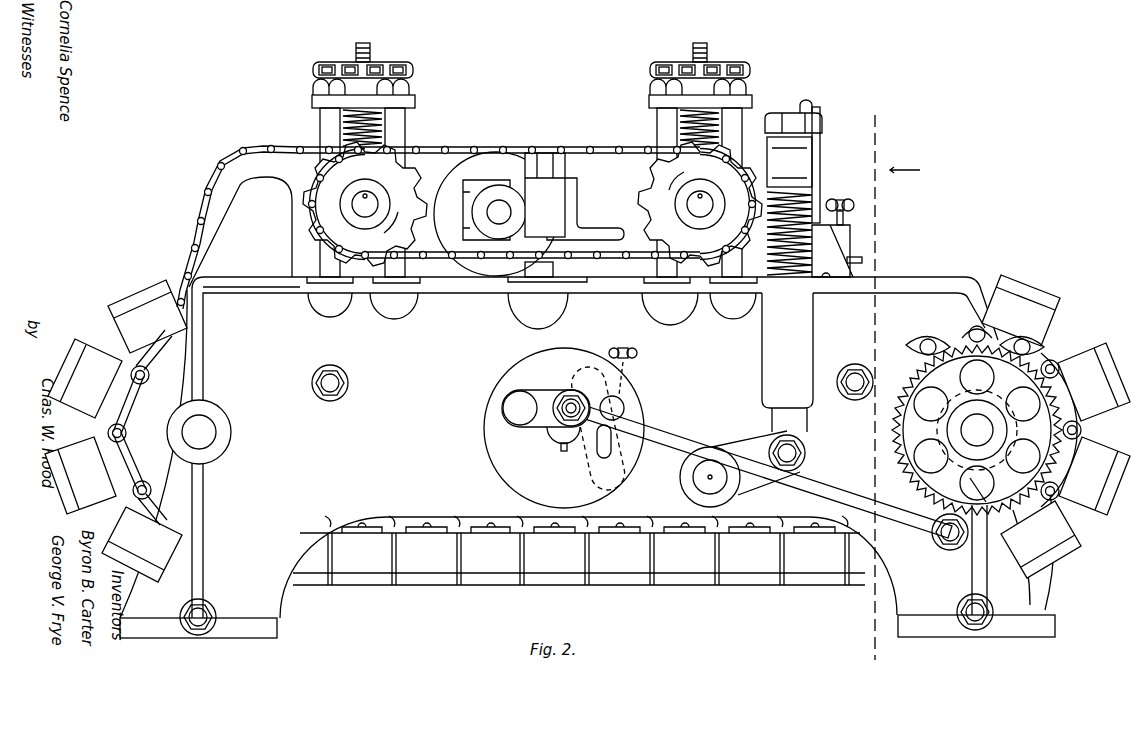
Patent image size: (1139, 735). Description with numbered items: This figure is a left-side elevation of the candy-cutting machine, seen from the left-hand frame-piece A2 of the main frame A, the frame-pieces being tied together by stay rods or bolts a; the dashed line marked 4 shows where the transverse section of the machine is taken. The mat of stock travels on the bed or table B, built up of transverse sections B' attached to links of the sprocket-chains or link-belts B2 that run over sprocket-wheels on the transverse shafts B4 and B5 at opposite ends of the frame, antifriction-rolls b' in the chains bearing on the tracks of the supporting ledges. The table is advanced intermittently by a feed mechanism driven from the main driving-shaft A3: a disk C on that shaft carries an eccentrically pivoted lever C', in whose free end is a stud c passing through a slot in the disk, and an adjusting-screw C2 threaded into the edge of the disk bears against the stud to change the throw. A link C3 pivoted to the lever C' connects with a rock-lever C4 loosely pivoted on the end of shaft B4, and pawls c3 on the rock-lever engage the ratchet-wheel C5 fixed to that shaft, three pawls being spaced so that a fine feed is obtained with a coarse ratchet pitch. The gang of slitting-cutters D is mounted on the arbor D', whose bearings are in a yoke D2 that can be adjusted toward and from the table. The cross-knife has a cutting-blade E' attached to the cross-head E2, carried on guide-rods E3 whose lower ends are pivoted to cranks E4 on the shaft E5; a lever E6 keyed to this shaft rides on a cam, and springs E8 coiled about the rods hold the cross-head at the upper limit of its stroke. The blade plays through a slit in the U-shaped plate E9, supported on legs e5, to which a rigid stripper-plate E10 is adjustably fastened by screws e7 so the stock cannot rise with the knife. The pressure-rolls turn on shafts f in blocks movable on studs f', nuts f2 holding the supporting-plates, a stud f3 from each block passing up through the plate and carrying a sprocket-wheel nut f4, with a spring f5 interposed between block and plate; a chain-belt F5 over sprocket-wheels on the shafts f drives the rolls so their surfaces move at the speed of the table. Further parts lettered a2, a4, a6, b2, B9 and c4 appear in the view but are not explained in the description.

The main frame A is at (588, 397).
The left-hand frame-piece A2 is at (280, 618).
The main driving-shaft A3 is at (548, 443).
The stay rods or bolts a is at (345, 376).
The bearing block a2 is at (555, 272).
The bearing block a4 is at (569, 167).
The bearing bracket a6 is at (482, 186).
The bed or table B is at (595, 293).
The table sections B' is at (587, 421).
The antifriction-rolls b' is at (594, 430).
The box lips b2 is at (96, 348).
The sprocket-chains or link-belts B2 is at (130, 410).
The transverse shaft B4 is at (977, 430).
The transverse shaft B5 is at (199, 432).
The curved plate B9 is at (80, 432).
The disk C is at (546, 428).
The lever C' is at (556, 417).
The stud c is at (620, 400).
The adjusting-screw C2 is at (637, 355).
The link C3 is at (676, 437).
The rock-lever C4 is at (932, 520).
The ratchet-wheel C5 is at (892, 436).
The pawls c3 is at (918, 353).
The pawl ring c4 is at (1002, 388).
The gang of slitting-cutters D is at (496, 214).
The shaft or arbor D' is at (499, 212).
The frame or yoke D2 is at (580, 214).
The cutting-blade E' is at (819, 161).
The cross-head E2 is at (789, 162).
The guide-rods E3 is at (790, 110).
The levers or cranks E4 is at (735, 445).
The shaft E5 is at (706, 477).
The lever E6 is at (768, 250).
The springs E8 is at (790, 280).
The screws e7 is at (842, 200).
The U-shaped plate E9 is at (851, 240).
The stripper-plate E10 is at (861, 259).
The legs or brackets e5 is at (828, 266).
The shafts or axles f is at (532, 204).
The guide rods or studs f' is at (532, 181).
The nuts f2 is at (534, 202).
The stud f3 is at (370, 42).
The nut f4 is at (414, 68).
The spring f5 is at (343, 126).
The chain-belt F5 is at (470, 146).
The section line 4 is at (873, 392).